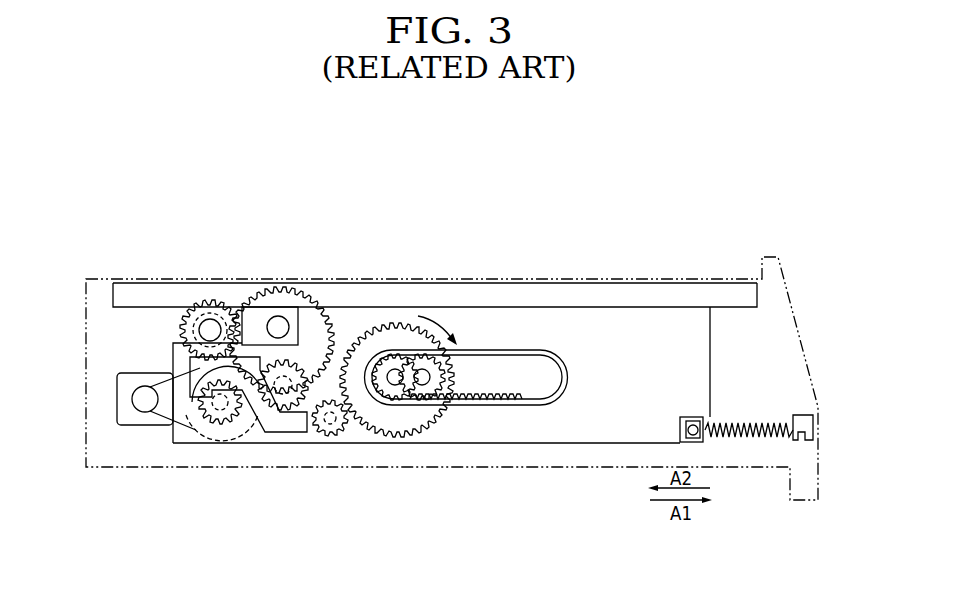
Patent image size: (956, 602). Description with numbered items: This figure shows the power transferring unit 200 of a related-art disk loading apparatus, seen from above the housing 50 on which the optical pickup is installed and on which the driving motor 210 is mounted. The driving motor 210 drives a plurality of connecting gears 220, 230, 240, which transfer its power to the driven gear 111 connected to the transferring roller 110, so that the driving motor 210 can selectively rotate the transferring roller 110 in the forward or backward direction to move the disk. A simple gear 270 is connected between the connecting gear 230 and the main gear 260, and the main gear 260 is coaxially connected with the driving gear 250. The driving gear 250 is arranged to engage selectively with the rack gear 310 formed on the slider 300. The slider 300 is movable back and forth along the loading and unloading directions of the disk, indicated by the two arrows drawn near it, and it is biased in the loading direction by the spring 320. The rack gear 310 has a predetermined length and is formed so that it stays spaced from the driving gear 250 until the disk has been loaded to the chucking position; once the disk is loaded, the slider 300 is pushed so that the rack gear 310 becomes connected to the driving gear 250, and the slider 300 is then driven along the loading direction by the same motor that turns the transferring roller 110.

The housing 50 is at (116, 467).
The transferring roller 110 is at (208, 303).
The driven gear 111 is at (213, 307).
The power transferring unit 200 is at (292, 436).
The driving motor 210 is at (143, 425).
The connecting gear 220 is at (194, 410).
The connecting gear 230 is at (259, 415).
The connecting gear 240 is at (267, 297).
The driving gear 250 is at (383, 350).
The main gear 260 is at (400, 437).
The simple gear 270 is at (333, 440).
The slider 300 is at (597, 433).
The rack gear 310 is at (514, 390).
The spring 320 is at (750, 440).